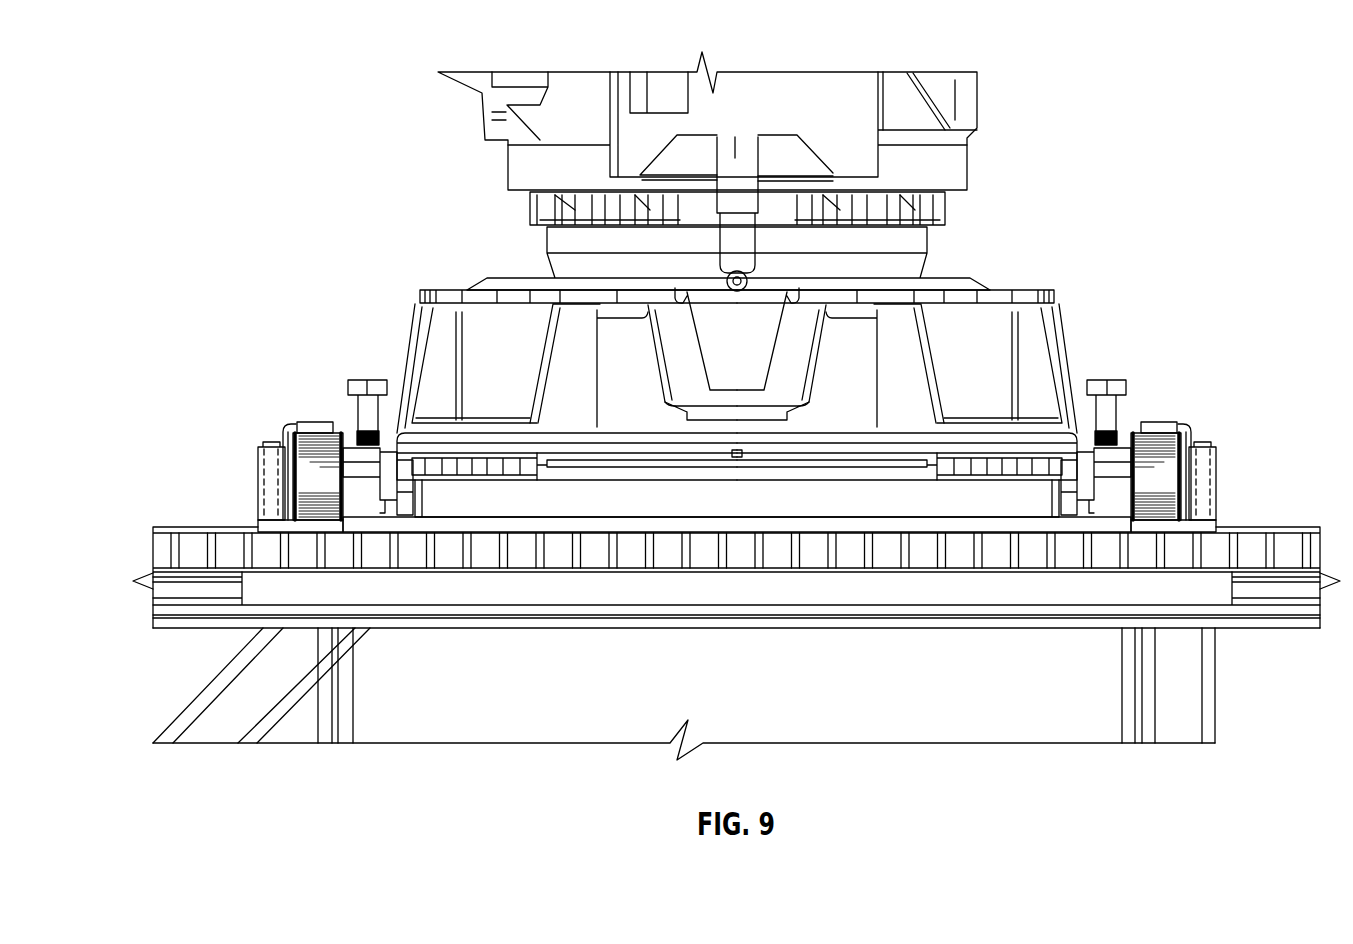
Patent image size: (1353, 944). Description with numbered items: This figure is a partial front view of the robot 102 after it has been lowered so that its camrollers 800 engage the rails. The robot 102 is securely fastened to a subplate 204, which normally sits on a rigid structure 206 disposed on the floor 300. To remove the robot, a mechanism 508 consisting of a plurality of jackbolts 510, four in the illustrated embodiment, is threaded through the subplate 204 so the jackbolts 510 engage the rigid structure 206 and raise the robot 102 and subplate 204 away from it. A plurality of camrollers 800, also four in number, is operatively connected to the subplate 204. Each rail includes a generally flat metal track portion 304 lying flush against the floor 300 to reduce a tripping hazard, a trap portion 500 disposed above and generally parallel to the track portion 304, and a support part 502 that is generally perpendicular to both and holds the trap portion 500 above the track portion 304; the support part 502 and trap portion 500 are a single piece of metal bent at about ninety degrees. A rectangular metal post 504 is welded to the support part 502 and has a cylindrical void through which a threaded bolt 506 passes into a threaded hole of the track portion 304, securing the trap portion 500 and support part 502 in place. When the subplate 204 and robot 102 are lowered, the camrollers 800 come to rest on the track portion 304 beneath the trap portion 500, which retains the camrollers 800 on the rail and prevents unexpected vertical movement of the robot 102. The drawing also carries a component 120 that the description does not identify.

The robot 102 is at (1000, 175).
The clamp tab 120 is at (327, 405).
The subplate 204 is at (843, 495).
The rigid structure 206 is at (522, 525).
The floor 300 is at (710, 563).
The track portion 304 is at (300, 534).
The trap portion 500 is at (737, 428).
The support part 502 is at (277, 437).
The post 504 is at (260, 510).
The threaded bolt 506 is at (260, 467).
The mechanism 508 is at (736, 406).
The jackbolt 510 is at (360, 385).
The camroller 800 is at (310, 435).